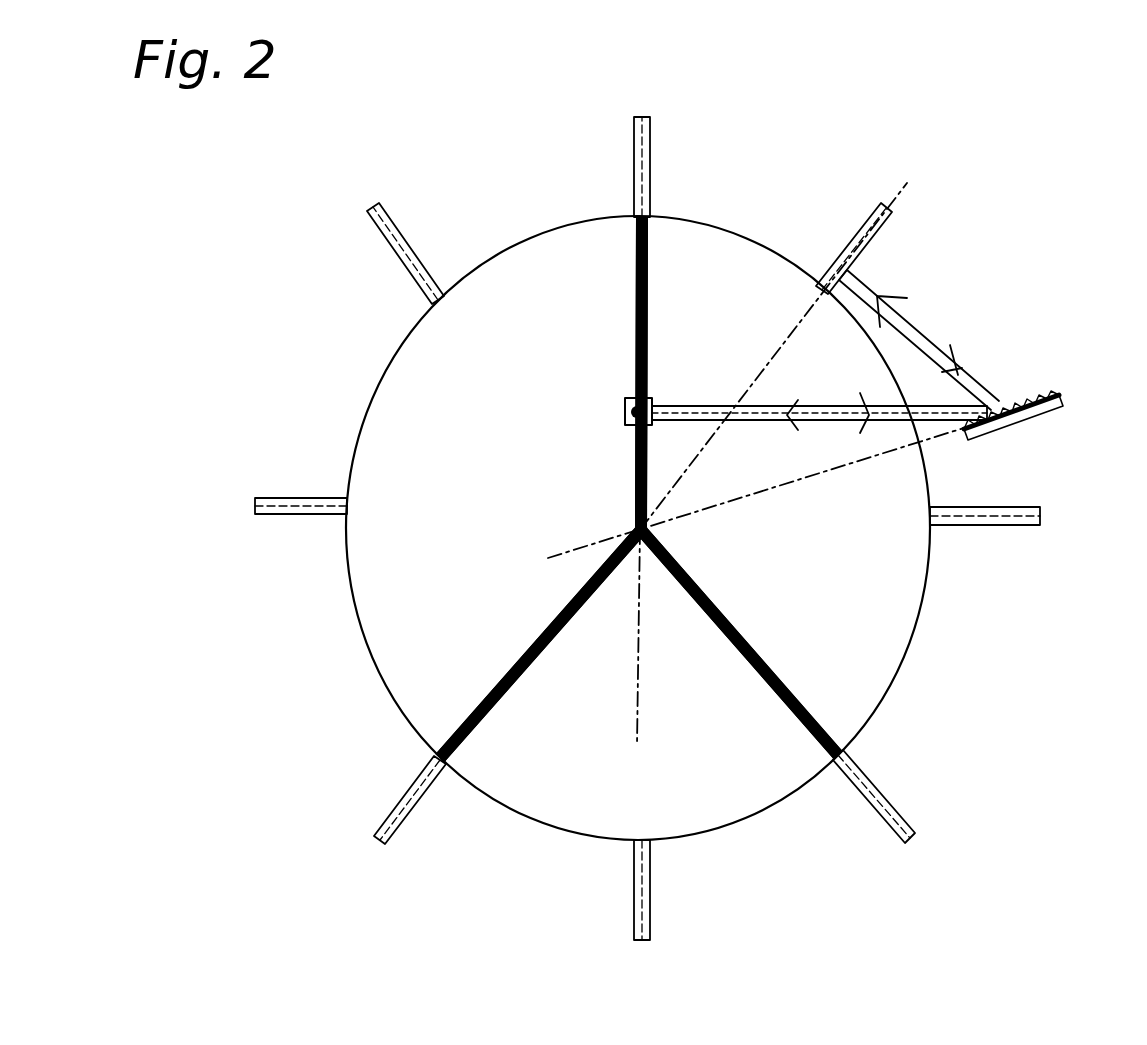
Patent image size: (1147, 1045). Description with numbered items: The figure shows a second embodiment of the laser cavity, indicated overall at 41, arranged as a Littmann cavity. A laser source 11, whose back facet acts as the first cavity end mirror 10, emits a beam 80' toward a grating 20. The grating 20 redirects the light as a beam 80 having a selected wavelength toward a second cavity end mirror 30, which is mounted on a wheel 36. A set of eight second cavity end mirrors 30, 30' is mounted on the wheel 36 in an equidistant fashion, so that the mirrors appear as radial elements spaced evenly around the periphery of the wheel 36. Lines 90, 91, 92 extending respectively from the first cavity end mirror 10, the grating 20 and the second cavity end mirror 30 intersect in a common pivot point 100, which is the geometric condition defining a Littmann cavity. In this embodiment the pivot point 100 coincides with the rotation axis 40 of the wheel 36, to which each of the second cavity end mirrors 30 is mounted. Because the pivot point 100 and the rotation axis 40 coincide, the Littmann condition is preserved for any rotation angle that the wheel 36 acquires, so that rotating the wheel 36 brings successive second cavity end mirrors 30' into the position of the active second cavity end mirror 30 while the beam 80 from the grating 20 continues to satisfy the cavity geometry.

The mixing device 41 is at (236, 283).
The wheel 36 is at (400, 637).
The pivot point 100 is at (670, 546).
The rotation axis 40 is at (639, 487).
The line extending from the first cavity end mirror 90 is at (637, 663).
The line extending from the grating 91 is at (843, 467).
The line extending from the second cavity end mirror 92 is at (783, 333).
The first cavity end mirror 10 is at (625, 412).
The laser source 11 is at (650, 400).
The beam 80' is at (819, 392).
The beam having a selected wavelength 80 is at (943, 340).
The grating 20 is at (1050, 405).
The second cavity end mirror 30 is at (894, 244).
The second cavity end mirrors 30' is at (647, 521).